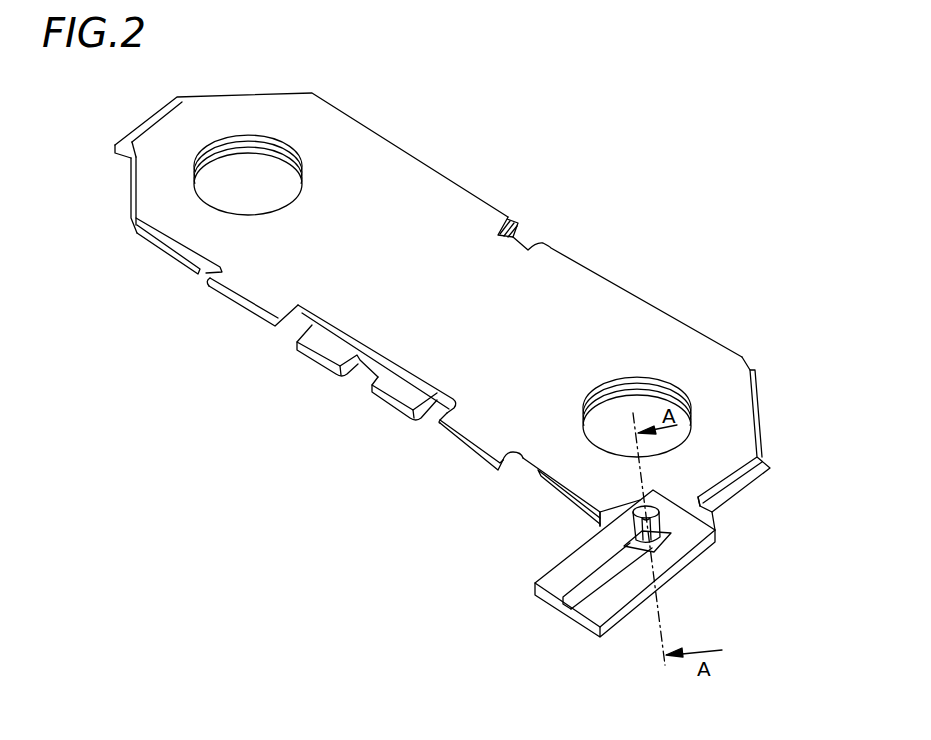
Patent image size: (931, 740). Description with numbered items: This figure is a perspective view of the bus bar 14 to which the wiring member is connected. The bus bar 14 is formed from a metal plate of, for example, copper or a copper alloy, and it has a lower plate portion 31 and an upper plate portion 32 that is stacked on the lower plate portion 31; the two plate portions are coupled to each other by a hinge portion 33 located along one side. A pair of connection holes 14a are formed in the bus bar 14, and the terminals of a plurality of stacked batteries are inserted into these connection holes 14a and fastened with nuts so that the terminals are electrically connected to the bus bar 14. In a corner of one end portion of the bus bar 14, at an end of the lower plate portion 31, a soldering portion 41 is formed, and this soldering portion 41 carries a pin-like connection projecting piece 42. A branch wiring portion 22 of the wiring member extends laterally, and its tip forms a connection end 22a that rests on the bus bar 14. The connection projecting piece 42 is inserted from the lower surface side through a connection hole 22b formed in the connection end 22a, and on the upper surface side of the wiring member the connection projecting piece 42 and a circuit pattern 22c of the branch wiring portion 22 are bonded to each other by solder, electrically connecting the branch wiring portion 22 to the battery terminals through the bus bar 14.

The bus bar 14 is at (433, 171).
The connection hole 14a is at (227, 163).
The branch wiring portion 22 is at (628, 614).
The connection end 22a is at (668, 556).
The connection hole 22b is at (672, 530).
The circuit pattern 22c is at (624, 545).
The lower plate portion 31 is at (135, 237).
The upper plate portion 32 is at (150, 190).
The hinge portion 33 is at (240, 296).
The soldering portion 41 is at (600, 526).
The connection projecting piece 42 is at (655, 524).